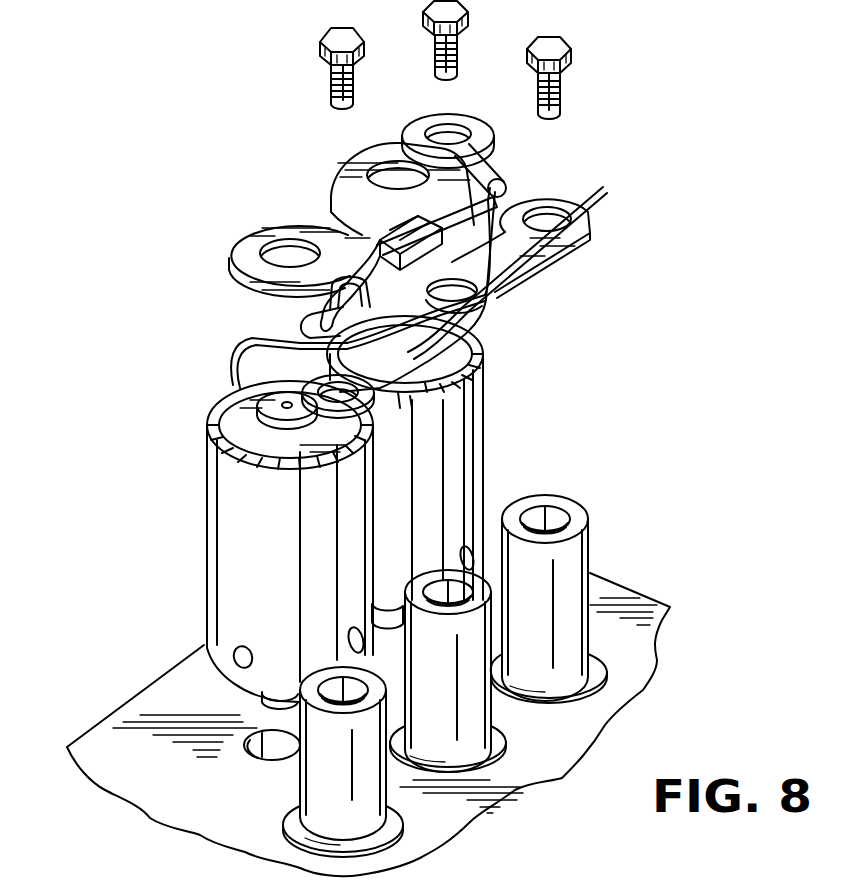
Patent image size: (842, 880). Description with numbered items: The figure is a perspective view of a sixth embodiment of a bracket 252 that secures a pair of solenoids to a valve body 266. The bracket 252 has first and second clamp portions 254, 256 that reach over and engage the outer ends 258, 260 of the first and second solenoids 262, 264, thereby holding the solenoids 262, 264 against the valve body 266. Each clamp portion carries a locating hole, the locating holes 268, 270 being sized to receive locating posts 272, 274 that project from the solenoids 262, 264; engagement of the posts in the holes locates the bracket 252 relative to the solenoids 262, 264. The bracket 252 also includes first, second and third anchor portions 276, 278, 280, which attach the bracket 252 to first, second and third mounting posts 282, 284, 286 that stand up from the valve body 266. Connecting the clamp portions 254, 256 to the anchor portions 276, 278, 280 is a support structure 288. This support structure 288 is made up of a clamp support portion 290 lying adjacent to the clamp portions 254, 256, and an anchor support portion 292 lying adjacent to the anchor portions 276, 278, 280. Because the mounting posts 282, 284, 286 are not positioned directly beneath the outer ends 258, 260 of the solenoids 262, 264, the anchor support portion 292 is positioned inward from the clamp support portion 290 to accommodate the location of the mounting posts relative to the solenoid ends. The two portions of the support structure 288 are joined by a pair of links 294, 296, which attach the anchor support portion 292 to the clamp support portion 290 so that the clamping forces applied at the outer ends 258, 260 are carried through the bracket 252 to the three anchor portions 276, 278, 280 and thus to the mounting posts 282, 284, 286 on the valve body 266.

The bracket 252 is at (200, 279).
The first clamp portion 254 is at (250, 248).
The second clamp portion 256 is at (357, 163).
The outer end of first solenoid 258 is at (232, 434).
The outer end of second solenoid 260 is at (475, 370).
The first solenoid 262 is at (230, 522).
The second solenoid 264 is at (473, 495).
The valve body 266 is at (147, 720).
The locating hole 268 is at (288, 242).
The locating hole 270 is at (388, 162).
The locating post 272 is at (277, 403).
The locating post 274 is at (407, 410).
The first anchor portion 276 is at (346, 413).
The second anchor portion 278 is at (480, 286).
The third anchor portion 280 is at (580, 207).
The first mounting post 282 is at (322, 757).
The second mounting post 284 is at (480, 687).
The third mounting post 286 is at (577, 577).
The support structure 288 is at (362, 230).
The clamp support portion 290 is at (335, 210).
The anchor support portion 292 is at (515, 248).
The link 294 is at (475, 330).
The link 296 is at (490, 188).